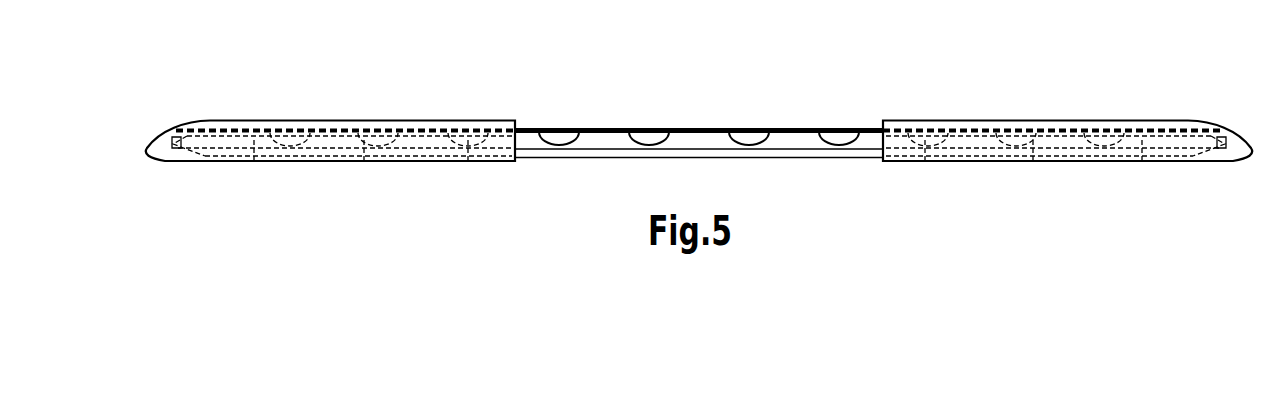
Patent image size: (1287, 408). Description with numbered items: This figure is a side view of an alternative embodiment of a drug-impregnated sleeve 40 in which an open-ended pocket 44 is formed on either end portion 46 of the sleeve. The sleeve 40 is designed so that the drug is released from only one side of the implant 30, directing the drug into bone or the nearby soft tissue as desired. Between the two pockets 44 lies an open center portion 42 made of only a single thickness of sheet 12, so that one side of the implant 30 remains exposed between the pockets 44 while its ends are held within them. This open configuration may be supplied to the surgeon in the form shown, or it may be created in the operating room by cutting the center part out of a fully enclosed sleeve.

The sleeve 40 is at (1067, 82).
The pocket 44 is at (376, 120).
The end portion 46 is at (310, 182).
The sheet 12 is at (609, 157).
The implant 30 is at (695, 143).
The open center portion 42 is at (662, 167).